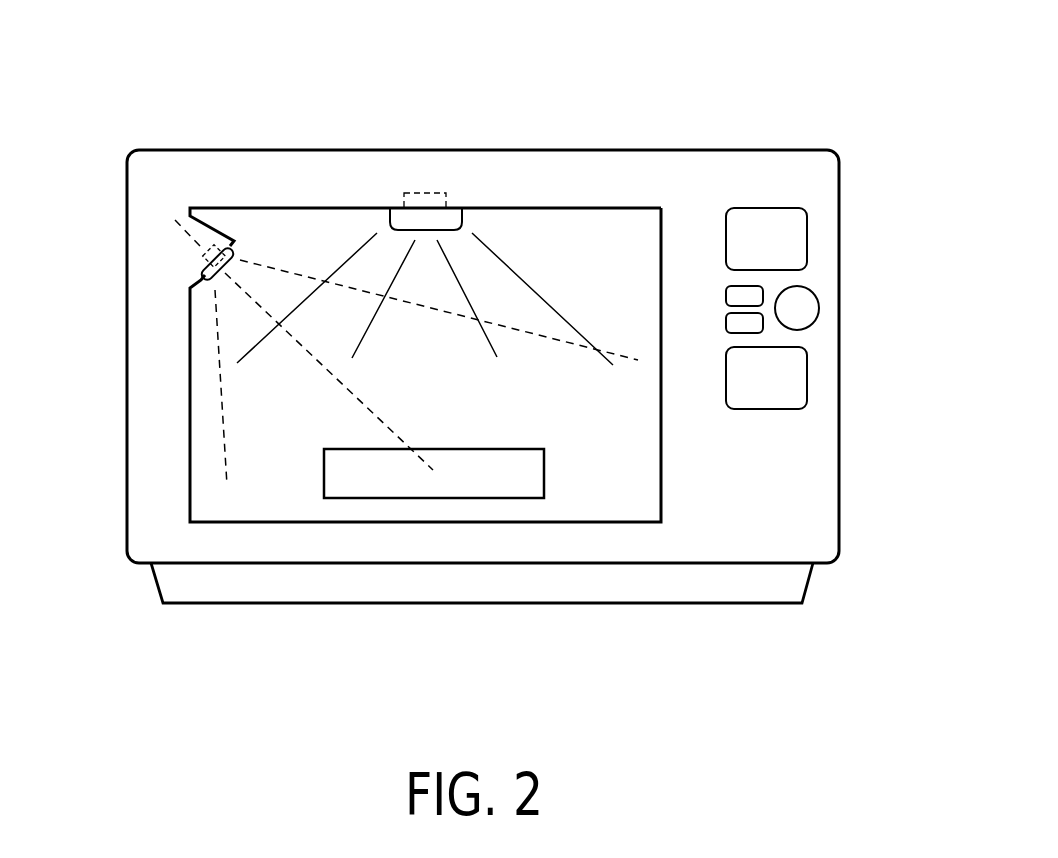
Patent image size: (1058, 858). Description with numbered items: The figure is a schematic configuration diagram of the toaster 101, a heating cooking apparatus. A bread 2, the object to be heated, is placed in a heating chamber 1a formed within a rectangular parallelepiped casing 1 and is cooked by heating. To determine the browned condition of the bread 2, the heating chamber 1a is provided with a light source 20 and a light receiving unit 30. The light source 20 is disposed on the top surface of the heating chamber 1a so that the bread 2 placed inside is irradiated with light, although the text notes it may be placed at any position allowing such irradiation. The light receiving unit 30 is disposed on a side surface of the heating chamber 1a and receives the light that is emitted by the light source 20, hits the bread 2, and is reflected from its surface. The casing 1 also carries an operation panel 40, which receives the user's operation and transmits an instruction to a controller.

The toaster 101 is at (863, 79).
The casing 1 is at (779, 150).
The heating chamber 1a is at (661, 263).
The bread 2 is at (455, 483).
The light source 20 is at (453, 190).
The light receiving unit 30 is at (192, 262).
The operation panel 40 is at (820, 335).